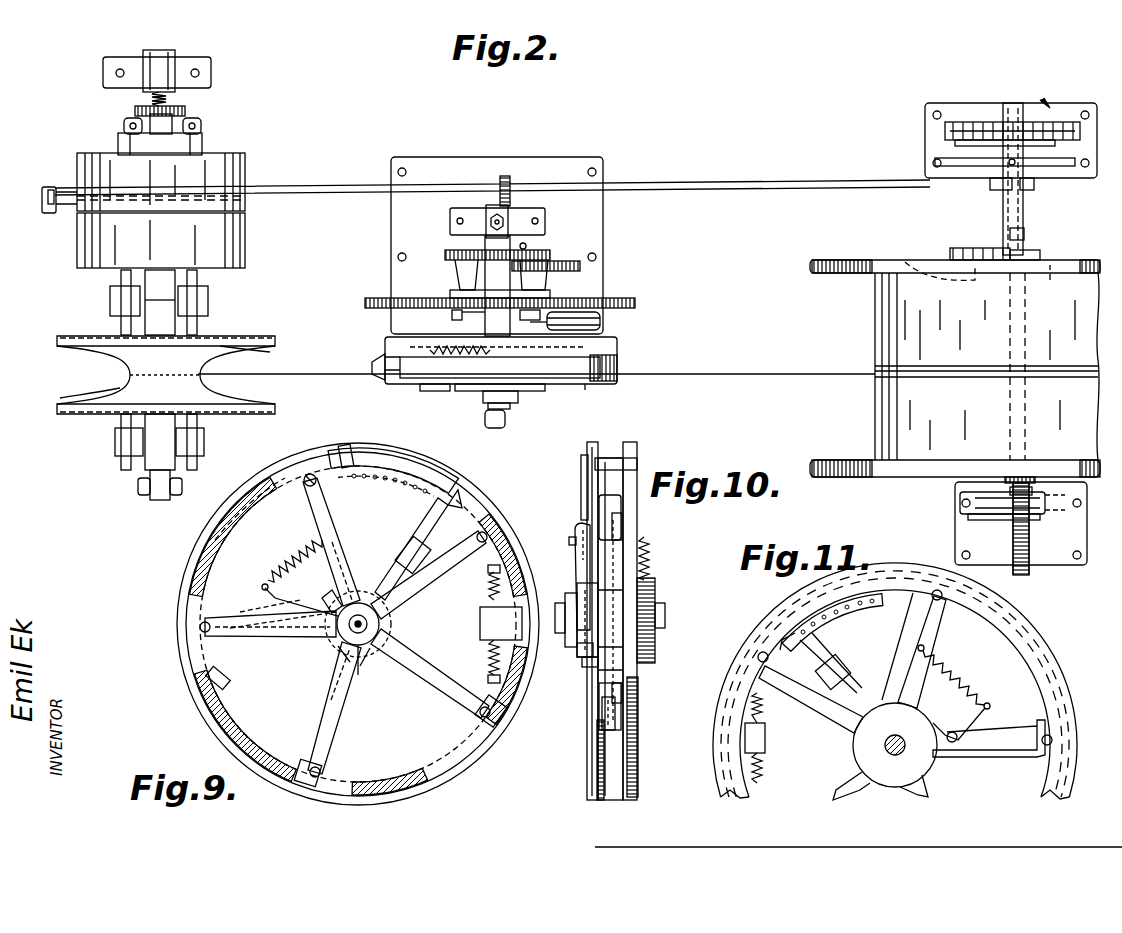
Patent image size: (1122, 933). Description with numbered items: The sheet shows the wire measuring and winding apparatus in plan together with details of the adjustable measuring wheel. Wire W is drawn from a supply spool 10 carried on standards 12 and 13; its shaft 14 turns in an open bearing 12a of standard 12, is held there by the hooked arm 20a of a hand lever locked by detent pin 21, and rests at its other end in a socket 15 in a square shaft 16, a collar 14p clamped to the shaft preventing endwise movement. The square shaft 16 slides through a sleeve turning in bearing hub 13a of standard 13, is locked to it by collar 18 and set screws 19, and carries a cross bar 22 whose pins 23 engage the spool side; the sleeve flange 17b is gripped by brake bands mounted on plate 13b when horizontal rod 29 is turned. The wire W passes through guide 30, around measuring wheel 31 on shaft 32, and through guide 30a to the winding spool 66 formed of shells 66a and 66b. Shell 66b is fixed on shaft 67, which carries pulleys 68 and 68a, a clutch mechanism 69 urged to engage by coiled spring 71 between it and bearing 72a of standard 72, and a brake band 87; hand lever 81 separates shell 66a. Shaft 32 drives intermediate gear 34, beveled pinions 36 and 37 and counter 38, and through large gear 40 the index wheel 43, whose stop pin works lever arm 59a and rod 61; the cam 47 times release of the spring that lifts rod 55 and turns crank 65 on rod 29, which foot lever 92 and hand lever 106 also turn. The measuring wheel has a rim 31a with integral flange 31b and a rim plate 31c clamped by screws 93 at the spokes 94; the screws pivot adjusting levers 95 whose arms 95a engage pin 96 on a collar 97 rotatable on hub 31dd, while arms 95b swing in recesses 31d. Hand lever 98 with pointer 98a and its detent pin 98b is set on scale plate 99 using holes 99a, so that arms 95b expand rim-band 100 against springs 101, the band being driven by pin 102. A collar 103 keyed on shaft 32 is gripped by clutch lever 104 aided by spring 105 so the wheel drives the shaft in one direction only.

In FIG. 2, the supply spool 10 is at (850, 273).
In FIG. 2, the standard 12 is at (958, 520).
In FIG. 2, the open bearing 12a is at (1000, 518).
In FIG. 2, the standard 13 is at (962, 105).
In FIG. 2, the bearing hub 13a is at (1000, 160).
In FIG. 2, the plate 13b is at (955, 143).
In FIG. 2, the shaft 14 is at (1030, 540).
In FIG. 2, the collar 14p is at (1005, 481).
In FIG. 2, the socket 15 is at (1028, 232).
In FIG. 2, the square shaft 16 is at (1015, 105).
In FIG. 2, the flange 17b is at (945, 131).
In FIG. 2, the collar 18 is at (993, 186).
In FIG. 2, the set screws 19 is at (1030, 186).
In FIG. 2, the hooked arm 20a is at (1032, 514).
In FIG. 2, the detent pin 21 is at (980, 512).
In FIG. 2, the cross bar 22 is at (955, 250).
In FIG. 2, the pins 23 is at (912, 264).
In FIG. 2, the horizontal rod 29 is at (706, 183).
In FIG. 2, the guide 30 is at (618, 360).
In FIG. 2, the guide 30a is at (380, 380).
In FIG. 2, the measuring wheel 31 is at (587, 385).
In FIG. 9, the rim 31a is at (218, 565).
In FIG. 10, the rim 31a is at (630, 458).
In FIG. 9, the flange 31b is at (190, 540).
In FIG. 10, the flange 31b is at (634, 445).
In FIG. 11, the flange 31b is at (1058, 672).
In FIG. 9, the rim plate 31c is at (306, 455).
In FIG. 10, the rim plate 31c is at (596, 445).
In FIG. 9, the recesses 31d is at (350, 780).
In FIG. 10, the recesses 31d is at (622, 498).
In FIG. 2, the hub 31dd is at (518, 394).
In FIG. 9, the hub 31dd is at (360, 670).
In FIG. 10, the hub 31dd is at (577, 652).
In FIG. 2, the shaft 32 is at (505, 402).
In FIG. 10, the shaft 32 is at (556, 618).
In FIG. 11, the shaft 32 is at (905, 750).
In FIG. 2, the intermediate gear 34 is at (562, 272).
In FIG. 2, the beveled pinion 36 is at (530, 322).
In FIG. 2, the pinion 37 is at (605, 331).
In FIG. 2, the counter 38 is at (600, 322).
In FIG. 2, the large gear 40 is at (548, 253).
In FIG. 2, the index wheel 43 is at (612, 298).
In FIG. 2, the cam 47 is at (526, 246).
In FIG. 2, the rod 55 is at (492, 214).
In FIG. 2, the arm 59a is at (452, 222).
In FIG. 2, the rod 61 is at (450, 317).
In FIG. 2, the crank 65 is at (502, 178).
In FIG. 2, the winding spool 66 is at (110, 400).
In FIG. 2, the shell 66a is at (100, 413).
In FIG. 2, the shell 66b is at (240, 338).
In FIG. 2, the shaft 67 is at (168, 54).
In FIG. 2, the pulley 68 is at (218, 158).
In FIG. 2, the loose pulley 68a is at (246, 226).
In FIG. 2, the clutch mechanism 69 is at (200, 127).
In FIG. 2, the coiled spring 71 is at (143, 97).
In FIG. 2, the standard 72 is at (113, 280).
In FIG. 2, the bearing 72a is at (147, 52).
In FIG. 2, the hand lever 81 is at (164, 500).
In FIG. 2, the brake band 87 is at (118, 141).
In FIG. 2, the foot lever 92 is at (497, 428).
In FIG. 9, the screws 93 is at (308, 490).
In FIG. 10, the screws 93 is at (600, 717).
In FIG. 9, the spokes 94 is at (322, 526).
In FIG. 11, the spokes 94 is at (937, 638).
In FIG. 9, the adjusting levers 95 is at (250, 620).
In FIG. 11, the adjusting levers 95 is at (897, 662).
In FIG. 9, the arm 95a is at (380, 556).
In FIG. 9, the arms 95b is at (205, 660).
In FIG. 10, the arms 95b is at (622, 512).
In FIG. 9, the pin 96 is at (325, 598).
In FIG. 2, the collar 97 is at (545, 388).
In FIG. 9, the collar 97 is at (396, 634).
In FIG. 10, the collar 97 is at (586, 667).
In FIG. 9, the hand lever 98 is at (400, 578).
In FIG. 10, the hand lever 98 is at (576, 563).
In FIG. 2, the pointer 98a is at (438, 391).
In FIG. 9, the pointer 98a is at (446, 505).
In FIG. 11, the pointer 98a is at (812, 640).
In FIG. 10, the pin 98b is at (572, 537).
In FIG. 9, the scale plate 99 is at (448, 466).
In FIG. 10, the scale plate 99 is at (582, 456).
In FIG. 11, the scale plate 99 is at (872, 608).
In FIG. 9, the holes 99a is at (372, 488).
In FIG. 9, the rim-band 100 is at (500, 538).
In FIG. 9, the springs 101 is at (480, 648).
In FIG. 11, the springs 101 is at (766, 738).
In FIG. 9, the pin 102 is at (232, 682).
In FIG. 9, the collar 103 is at (345, 650).
In FIG. 10, the collar 103 is at (658, 592).
In FIG. 11, the collar 103 is at (862, 740).
In FIG. 9, the clutch lever 104 is at (263, 589).
In FIG. 11, the clutch lever 104 is at (968, 718).
In FIG. 2, the spring 105 is at (458, 345).
In FIG. 9, the spring 105 is at (299, 561).
In FIG. 10, the spring 105 is at (650, 556).
In FIG. 11, the spring 105 is at (970, 690).
In FIG. 2, the hand lever 106 is at (46, 208).
In FIG. 2, the wire W is at (270, 374).